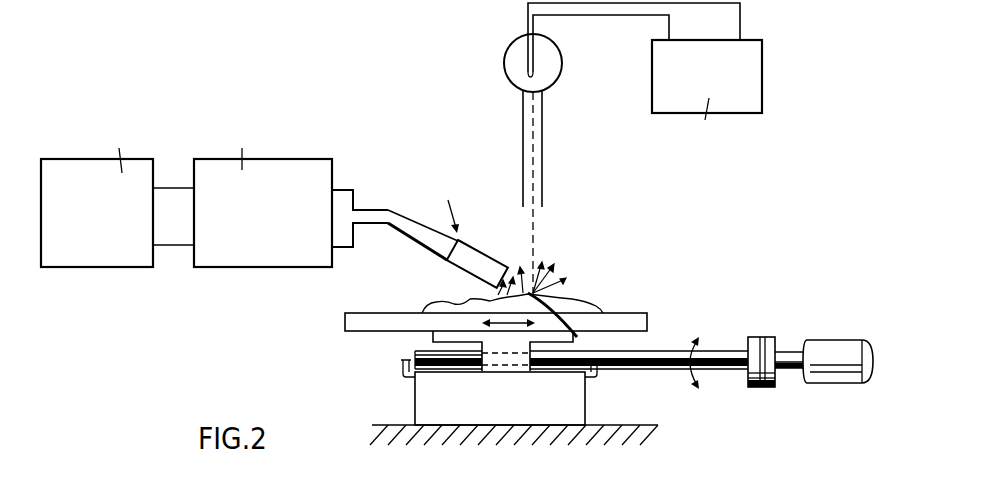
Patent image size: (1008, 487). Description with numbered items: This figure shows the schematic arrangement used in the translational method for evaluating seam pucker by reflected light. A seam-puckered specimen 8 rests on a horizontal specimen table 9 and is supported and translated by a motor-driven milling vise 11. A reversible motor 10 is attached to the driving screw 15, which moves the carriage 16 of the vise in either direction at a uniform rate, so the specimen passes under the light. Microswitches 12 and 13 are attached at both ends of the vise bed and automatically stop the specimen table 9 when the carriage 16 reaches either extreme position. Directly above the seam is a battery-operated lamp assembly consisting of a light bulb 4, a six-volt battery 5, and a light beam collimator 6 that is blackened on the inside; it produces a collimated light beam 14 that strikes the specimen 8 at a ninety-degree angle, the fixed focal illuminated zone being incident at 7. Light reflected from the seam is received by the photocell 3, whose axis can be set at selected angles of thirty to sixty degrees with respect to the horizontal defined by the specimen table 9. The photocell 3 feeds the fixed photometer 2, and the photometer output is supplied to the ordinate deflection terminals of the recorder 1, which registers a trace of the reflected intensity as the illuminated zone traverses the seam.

The recorder 1 is at (90, 214).
The photometer 2 is at (270, 214).
The photocell 3 is at (470, 256).
The light bulb 4 is at (528, 63).
The 6-volt battery 5 is at (697, 82).
The light beam collimator 6 is at (547, 150).
The point of light incidence 7 is at (561, 322).
The specimen 8 is at (593, 303).
The specimen table 9 is at (625, 315).
The reversible motor 10 is at (825, 347).
The milling vise 11 is at (514, 402).
The microswitch 12 is at (402, 372).
The microswitch 13 is at (597, 376).
The collimated light beam 14 is at (535, 232).
The driving screw 15 is at (640, 370).
The carriage 16 is at (495, 358).